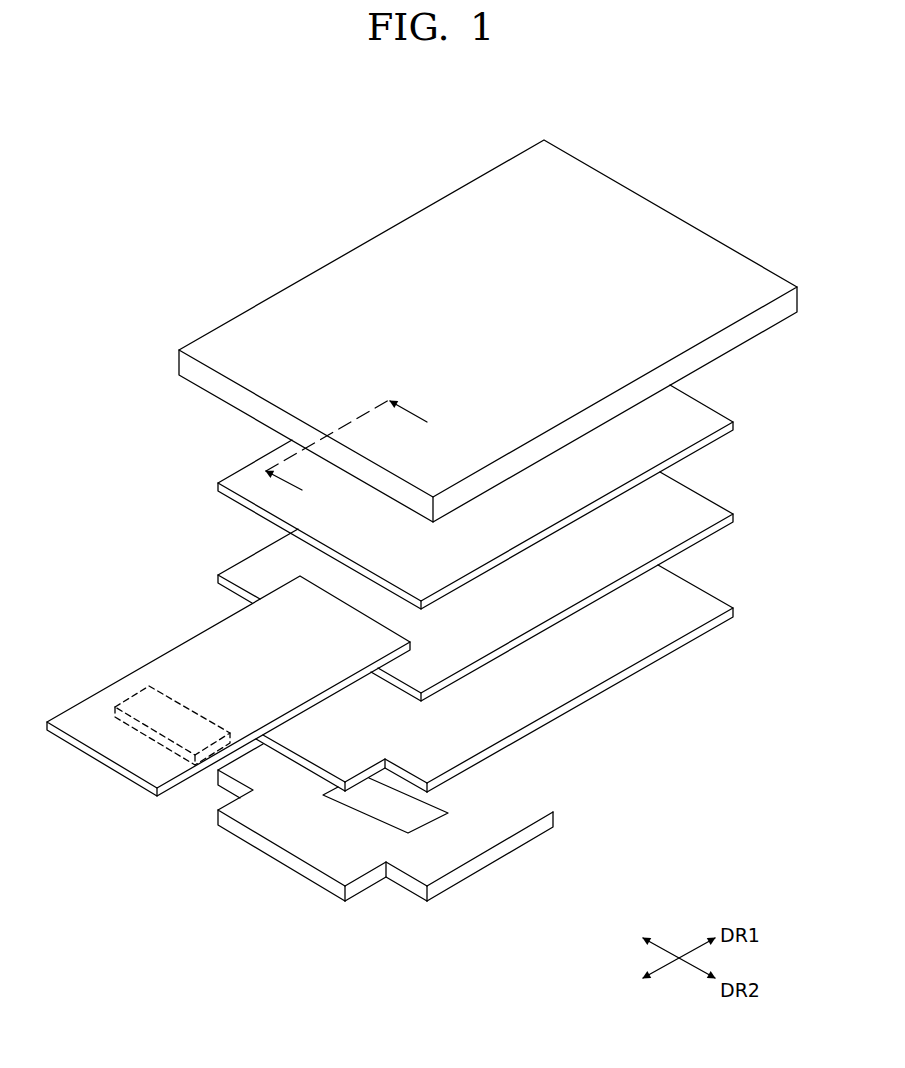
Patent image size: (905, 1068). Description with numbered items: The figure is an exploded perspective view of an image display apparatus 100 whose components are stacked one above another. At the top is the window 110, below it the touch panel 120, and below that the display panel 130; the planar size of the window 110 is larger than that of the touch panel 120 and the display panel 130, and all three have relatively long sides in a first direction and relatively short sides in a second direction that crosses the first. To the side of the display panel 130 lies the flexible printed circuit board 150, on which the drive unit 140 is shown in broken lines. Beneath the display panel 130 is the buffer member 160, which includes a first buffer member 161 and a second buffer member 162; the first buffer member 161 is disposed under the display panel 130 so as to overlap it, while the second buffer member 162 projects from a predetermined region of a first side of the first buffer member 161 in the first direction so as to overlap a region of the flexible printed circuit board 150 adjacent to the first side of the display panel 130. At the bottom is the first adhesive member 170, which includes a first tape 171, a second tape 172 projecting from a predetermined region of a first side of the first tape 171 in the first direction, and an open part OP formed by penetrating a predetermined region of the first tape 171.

The image display apparatus 100 is at (693, 153).
The window 110 is at (743, 268).
The touch panel 120 is at (707, 415).
The display panel 130 is at (707, 509).
The drive unit 140 is at (143, 704).
The flexible printed circuit board 150 is at (210, 645).
The buffer member 160 is at (494, 678).
The first buffer member 161 is at (576, 683).
The second buffer member 162 is at (357, 763).
The first adhesive member 170 is at (385, 851).
The first tape 171 is at (452, 860).
The second tape 172 is at (403, 906).
The open part OP is at (390, 806).